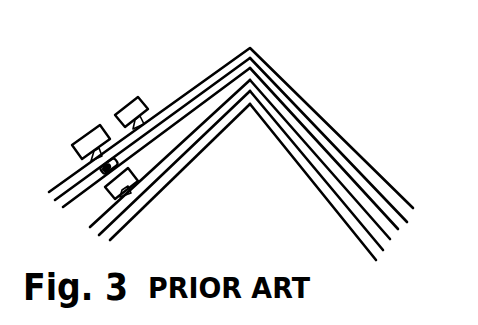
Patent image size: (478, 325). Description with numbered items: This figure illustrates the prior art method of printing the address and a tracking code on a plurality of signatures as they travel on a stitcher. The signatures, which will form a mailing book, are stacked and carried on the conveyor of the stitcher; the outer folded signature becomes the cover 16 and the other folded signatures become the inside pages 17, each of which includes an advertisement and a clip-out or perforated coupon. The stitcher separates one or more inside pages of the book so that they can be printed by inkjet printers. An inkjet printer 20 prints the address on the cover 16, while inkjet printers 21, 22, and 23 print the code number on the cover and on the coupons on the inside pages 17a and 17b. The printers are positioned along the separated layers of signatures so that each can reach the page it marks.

The cover 16 is at (200, 84).
The inside pages 17 is at (398, 229).
The inside page 17a is at (67, 206).
The inside page 17b is at (94, 223).
The inkjet printer 20 is at (96, 126).
The inkjet printer 21 is at (121, 107).
The inkjet printer 22 is at (118, 157).
The inkjet printer 23 is at (137, 172).